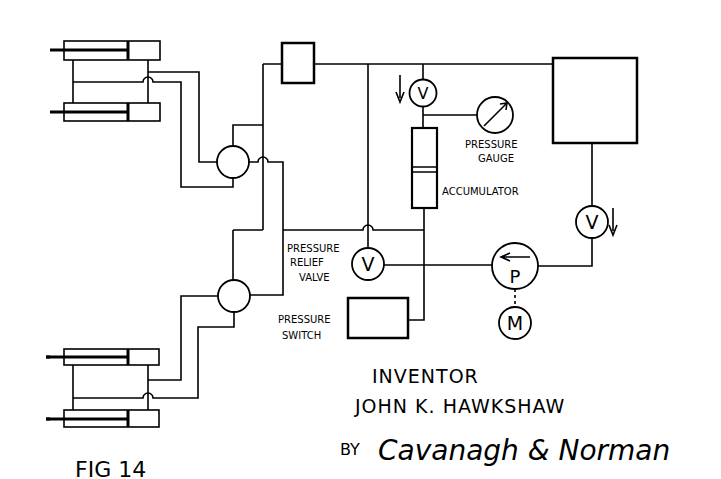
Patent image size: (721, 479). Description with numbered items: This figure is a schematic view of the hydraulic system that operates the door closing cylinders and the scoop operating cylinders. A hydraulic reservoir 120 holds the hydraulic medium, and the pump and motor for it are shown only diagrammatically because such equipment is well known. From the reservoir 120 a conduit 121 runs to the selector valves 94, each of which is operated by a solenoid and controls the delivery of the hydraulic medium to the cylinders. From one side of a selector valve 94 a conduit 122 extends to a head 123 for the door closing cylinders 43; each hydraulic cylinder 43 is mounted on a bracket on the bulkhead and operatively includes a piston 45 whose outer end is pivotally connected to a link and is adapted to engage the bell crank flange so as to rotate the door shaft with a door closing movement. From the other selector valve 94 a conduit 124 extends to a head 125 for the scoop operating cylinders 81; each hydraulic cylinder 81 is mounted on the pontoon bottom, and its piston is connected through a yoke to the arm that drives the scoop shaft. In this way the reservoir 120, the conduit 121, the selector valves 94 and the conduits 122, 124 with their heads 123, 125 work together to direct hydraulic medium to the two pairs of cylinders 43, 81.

The hydraulic cylinder 81 is at (109, 41).
The head 125 is at (165, 80).
The conduit 124 is at (200, 97).
The selector valve 94 is at (237, 179).
The conduit 122 is at (180, 318).
The head 123 is at (147, 378).
The hydraulic cylinder 43 is at (108, 349).
The piston 45 is at (47, 422).
The conduit 121 is at (340, 64).
The hydraulic reservoir 120 is at (612, 143).